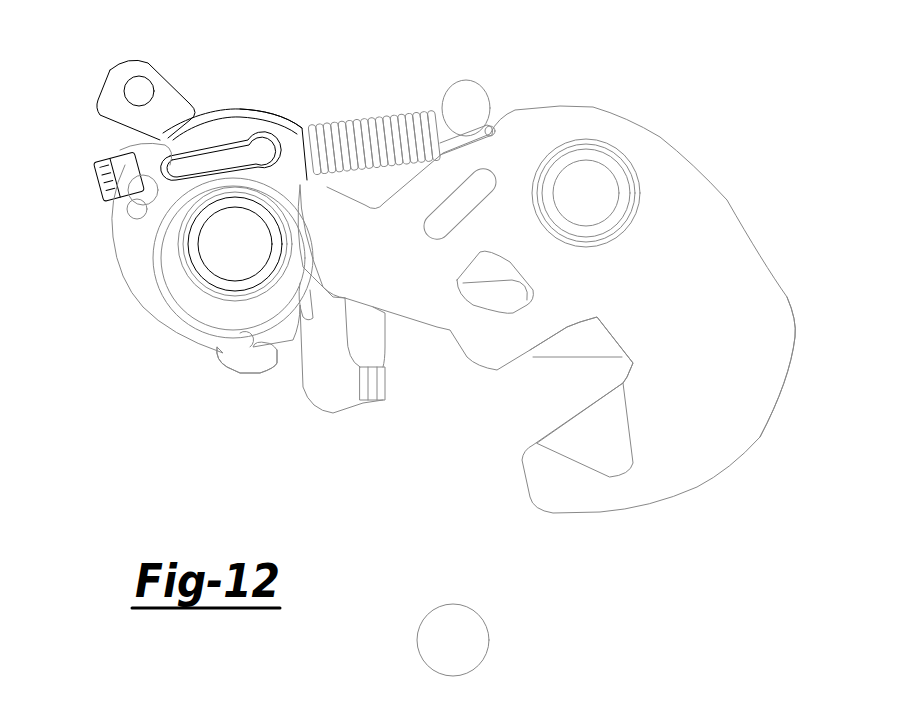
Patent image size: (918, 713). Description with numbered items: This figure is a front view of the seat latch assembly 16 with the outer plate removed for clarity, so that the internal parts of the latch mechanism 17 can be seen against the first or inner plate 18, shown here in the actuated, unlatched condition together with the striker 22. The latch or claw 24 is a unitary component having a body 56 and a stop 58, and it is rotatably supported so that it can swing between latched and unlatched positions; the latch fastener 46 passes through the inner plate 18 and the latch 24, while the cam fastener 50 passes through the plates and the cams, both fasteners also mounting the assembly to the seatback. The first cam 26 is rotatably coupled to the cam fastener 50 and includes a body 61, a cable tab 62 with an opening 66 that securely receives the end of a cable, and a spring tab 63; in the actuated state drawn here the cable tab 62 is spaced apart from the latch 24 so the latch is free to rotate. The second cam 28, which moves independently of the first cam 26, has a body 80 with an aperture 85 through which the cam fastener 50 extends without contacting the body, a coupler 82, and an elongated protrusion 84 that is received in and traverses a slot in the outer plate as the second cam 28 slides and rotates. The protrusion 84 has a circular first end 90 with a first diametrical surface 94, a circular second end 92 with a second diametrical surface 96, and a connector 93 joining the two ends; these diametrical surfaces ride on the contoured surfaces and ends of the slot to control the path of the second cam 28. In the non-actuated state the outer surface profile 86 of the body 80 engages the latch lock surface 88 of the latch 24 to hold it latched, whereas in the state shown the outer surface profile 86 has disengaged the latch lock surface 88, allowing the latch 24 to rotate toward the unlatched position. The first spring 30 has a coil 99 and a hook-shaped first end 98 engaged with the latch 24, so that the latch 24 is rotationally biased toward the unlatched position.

The seat latch assembly 16 is at (660, 92).
The latch mechanism 17 is at (535, 88).
The first or inner plate 18 is at (582, 348).
The striker 22 is at (472, 638).
The latch or claw 24 is at (780, 240).
The first cam 26 is at (101, 83).
The second cam 28 is at (148, 306).
The first spring 30 is at (394, 120).
The latch fastener 46 is at (627, 192).
The cam fastener 50 is at (187, 255).
The body 56 is at (762, 333).
The stop 58 is at (617, 437).
The body 61 is at (274, 117).
The cable tab 62 is at (157, 80).
The spring tab 63 is at (243, 365).
The opening 66 is at (139, 92).
The body 80 is at (221, 133).
The coupler 82 is at (108, 190).
The elongated protrusion 84 is at (245, 140).
The aperture 85 is at (200, 322).
The outer surface profile 86 is at (286, 120).
The latch lock surface 88 is at (375, 307).
The first end 90 is at (280, 175).
The second end 92 is at (175, 168).
The connector 93 is at (203, 160).
The first diametrical surface 94 is at (268, 158).
The second diametrical surface 96 is at (178, 185).
The first end 98 is at (490, 130).
The coil 99 is at (423, 118).